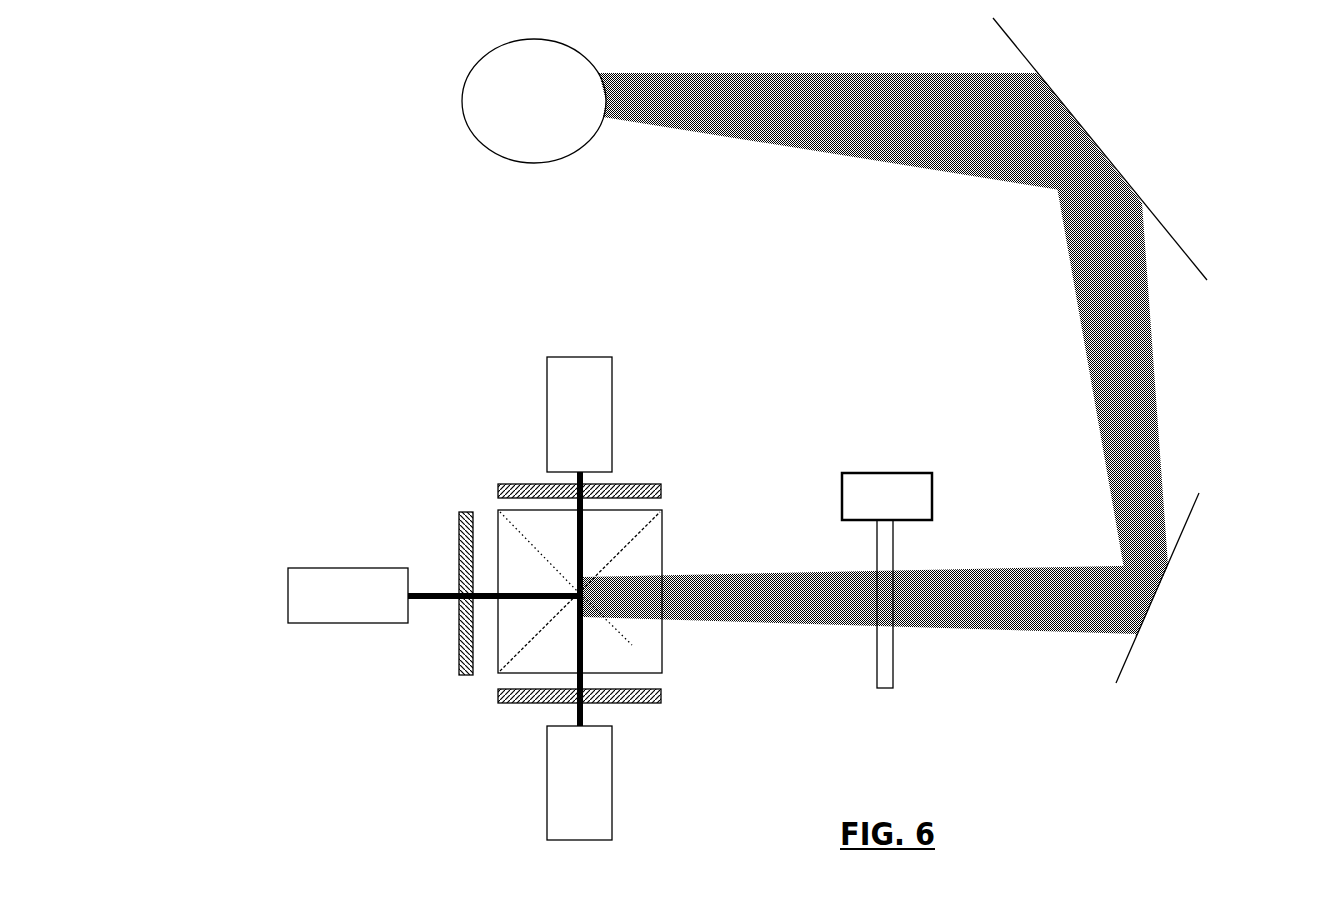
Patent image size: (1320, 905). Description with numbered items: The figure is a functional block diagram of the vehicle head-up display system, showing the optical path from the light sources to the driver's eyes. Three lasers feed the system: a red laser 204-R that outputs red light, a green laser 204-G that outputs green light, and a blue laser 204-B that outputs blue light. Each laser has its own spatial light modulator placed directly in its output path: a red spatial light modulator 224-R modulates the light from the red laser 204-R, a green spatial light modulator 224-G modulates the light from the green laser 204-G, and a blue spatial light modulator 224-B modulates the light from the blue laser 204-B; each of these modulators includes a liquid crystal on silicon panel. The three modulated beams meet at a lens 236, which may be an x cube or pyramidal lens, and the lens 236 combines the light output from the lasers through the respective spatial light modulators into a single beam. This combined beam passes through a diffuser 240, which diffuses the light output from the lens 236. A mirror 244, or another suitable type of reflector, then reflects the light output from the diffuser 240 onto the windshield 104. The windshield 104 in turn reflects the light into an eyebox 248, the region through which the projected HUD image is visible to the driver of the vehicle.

The windshield 104 is at (1167, 227).
The red laser 204-R is at (547, 413).
The green laser 204-G is at (547, 787).
The blue laser 204-B is at (288, 598).
The red spatial light modulator 224-R is at (498, 492).
The green spatial light modulator 224-G is at (535, 706).
The blue spatial light modulator 224-B is at (459, 537).
The lens 236 is at (662, 537).
The diffuser 240 is at (885, 690).
The mirror 244 is at (1127, 658).
The eyebox 248 is at (465, 92).